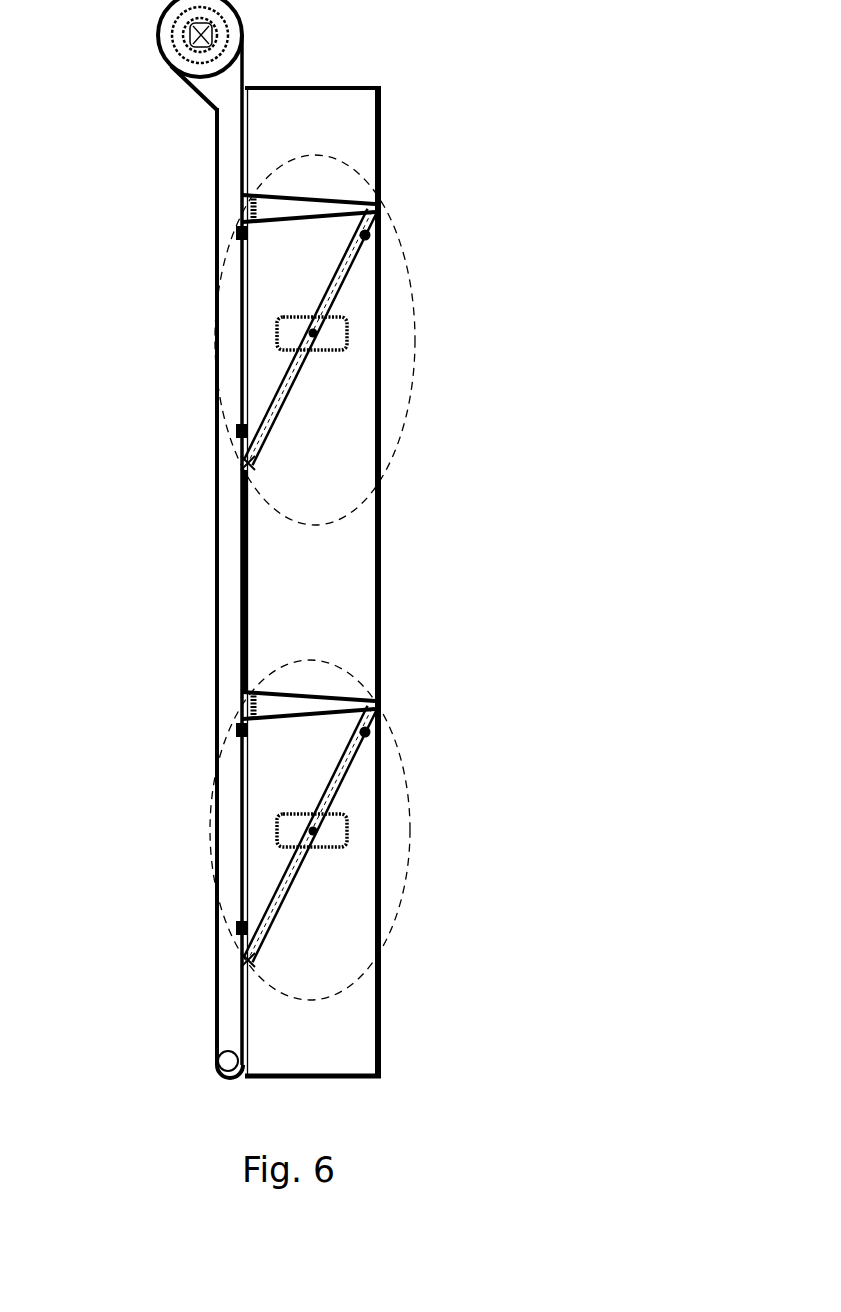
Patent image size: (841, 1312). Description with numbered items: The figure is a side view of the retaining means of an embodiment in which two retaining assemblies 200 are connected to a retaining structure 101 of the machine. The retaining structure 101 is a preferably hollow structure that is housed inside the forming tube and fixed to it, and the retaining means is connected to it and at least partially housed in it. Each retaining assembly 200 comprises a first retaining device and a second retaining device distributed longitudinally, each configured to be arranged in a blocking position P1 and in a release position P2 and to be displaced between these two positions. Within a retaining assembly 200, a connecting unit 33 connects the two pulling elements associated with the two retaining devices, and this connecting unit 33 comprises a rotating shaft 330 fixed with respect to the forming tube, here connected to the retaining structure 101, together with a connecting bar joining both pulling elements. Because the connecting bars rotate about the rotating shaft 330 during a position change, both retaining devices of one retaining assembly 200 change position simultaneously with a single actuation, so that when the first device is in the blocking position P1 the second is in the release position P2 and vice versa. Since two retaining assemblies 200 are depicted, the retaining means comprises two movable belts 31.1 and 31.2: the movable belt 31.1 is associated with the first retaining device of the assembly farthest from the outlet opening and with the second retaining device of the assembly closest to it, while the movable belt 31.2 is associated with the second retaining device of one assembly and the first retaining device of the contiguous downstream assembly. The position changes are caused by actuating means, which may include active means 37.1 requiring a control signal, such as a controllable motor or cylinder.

The retaining structure 101 is at (358, 144).
The active means 37.1 is at (212, 35).
The movable belt 31.1 is at (217, 674).
The movable belt 31.2 is at (242, 546).
The retaining assembly 200 is at (230, 251).
The blocking position P1 is at (364, 240).
The release position P2 is at (272, 466).
The connecting unit 33 is at (292, 407).
The rotating shaft 330 is at (315, 831).